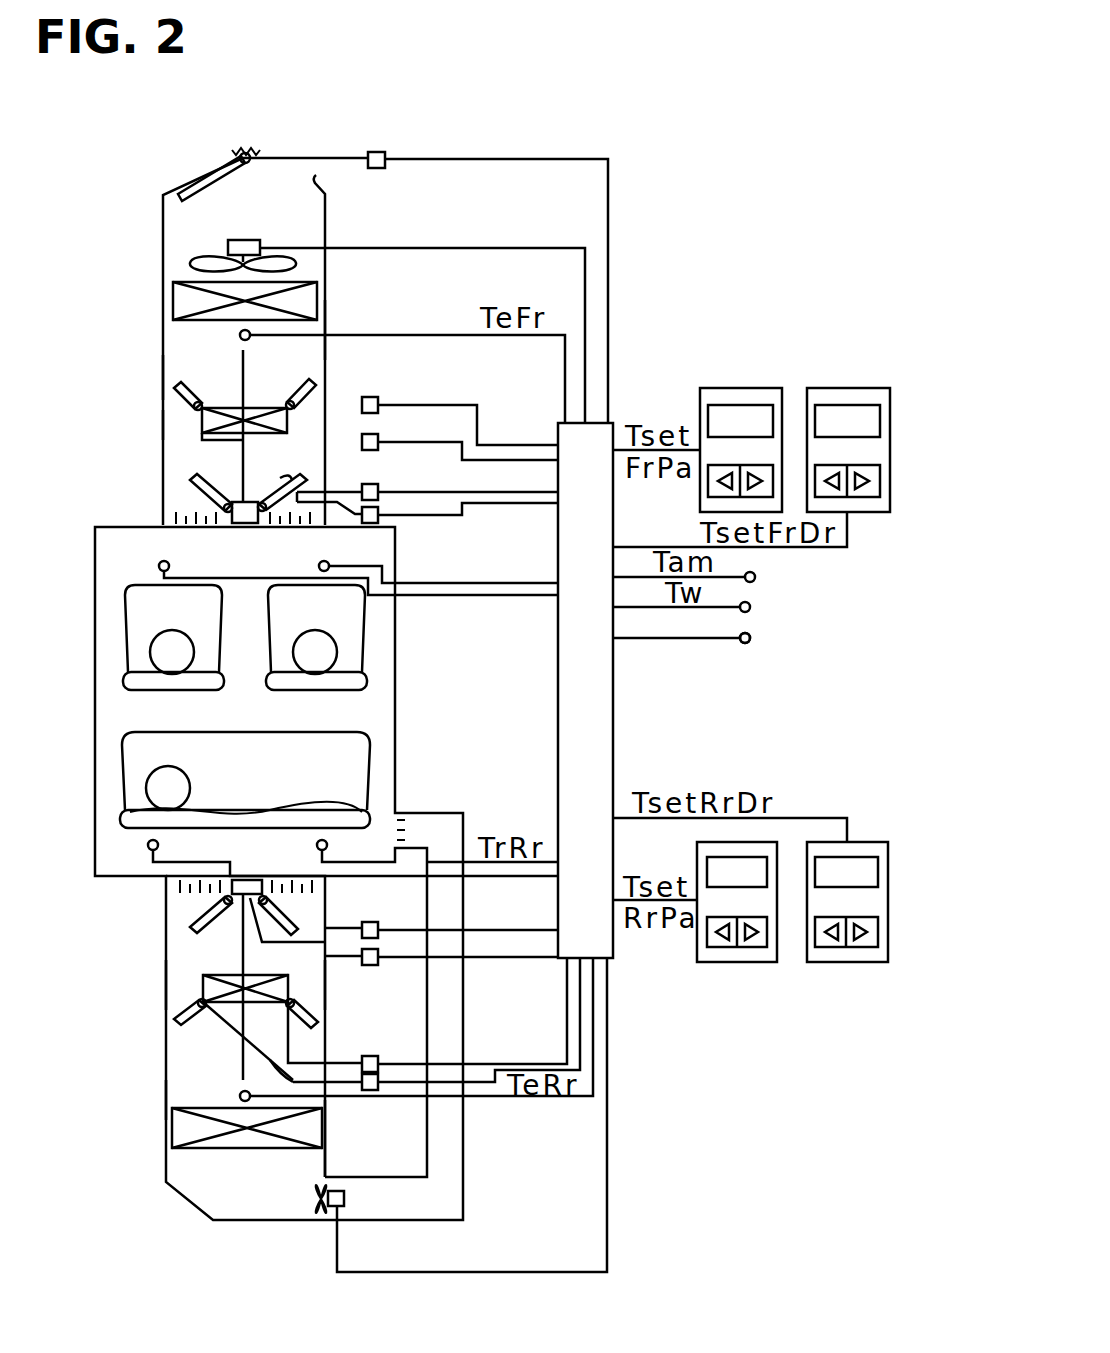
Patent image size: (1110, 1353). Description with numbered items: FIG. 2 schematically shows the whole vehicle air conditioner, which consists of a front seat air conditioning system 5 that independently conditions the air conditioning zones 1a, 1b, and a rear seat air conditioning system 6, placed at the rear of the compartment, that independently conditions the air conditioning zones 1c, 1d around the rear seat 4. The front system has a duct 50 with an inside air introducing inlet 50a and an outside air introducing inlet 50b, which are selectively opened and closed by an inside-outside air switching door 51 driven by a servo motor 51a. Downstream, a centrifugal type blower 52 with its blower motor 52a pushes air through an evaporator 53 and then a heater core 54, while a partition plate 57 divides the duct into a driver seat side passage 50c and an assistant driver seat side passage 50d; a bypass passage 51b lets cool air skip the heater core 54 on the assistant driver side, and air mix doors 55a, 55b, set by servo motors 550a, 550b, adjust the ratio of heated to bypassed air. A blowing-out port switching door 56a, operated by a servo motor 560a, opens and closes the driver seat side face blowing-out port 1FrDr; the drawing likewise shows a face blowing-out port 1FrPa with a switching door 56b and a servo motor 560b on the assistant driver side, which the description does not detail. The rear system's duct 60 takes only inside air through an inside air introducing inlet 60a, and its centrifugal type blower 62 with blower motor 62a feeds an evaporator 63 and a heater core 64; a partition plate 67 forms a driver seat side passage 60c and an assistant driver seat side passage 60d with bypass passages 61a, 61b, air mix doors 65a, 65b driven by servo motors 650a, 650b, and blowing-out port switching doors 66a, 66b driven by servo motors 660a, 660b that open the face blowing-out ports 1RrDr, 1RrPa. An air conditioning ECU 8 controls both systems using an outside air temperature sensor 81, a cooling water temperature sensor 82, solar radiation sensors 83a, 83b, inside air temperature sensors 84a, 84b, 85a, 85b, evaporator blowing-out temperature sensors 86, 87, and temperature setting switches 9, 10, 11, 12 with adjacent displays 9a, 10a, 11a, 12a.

The air conditioning zone 1a is at (340, 623).
The air conditioning zone 1b is at (195, 623).
The air conditioning zone 1c is at (340, 762).
The air conditioning zone 1d is at (195, 762).
The rear seat 4 is at (370, 752).
The front seat air conditioning system 5 is at (152, 222).
The rear seat air conditioning system 6 is at (176, 1218).
The air conditioning ECU 8 is at (614, 958).
The temperature setting switch 9 is at (765, 465).
The display 9a is at (740, 405).
The temperature setting switch 10 is at (865, 512).
The display 10a is at (845, 405).
The temperature setting switch 11 is at (865, 947).
The display 11a is at (865, 857).
The temperature setting switch 12 is at (715, 947).
The display 12a is at (760, 887).
The duct 50 is at (327, 208).
The inside air introducing inlet 50a is at (288, 172).
The outside air introducing inlet 50b is at (208, 165).
The driver seat side passage 50c is at (330, 334).
The assistant driver seat side passage 50d is at (195, 372).
The inside-outside air switching door 51 is at (180, 192).
The servo motor 51a is at (377, 152).
The bypass passage 51b is at (180, 425).
The centrifugal type blower 52 is at (300, 265).
The blower motor 52a is at (258, 243).
The evaporator 53 is at (180, 300).
The heater core 54 is at (270, 405).
The air mix door 55a is at (305, 392).
The air mix door 55b is at (180, 396).
The blowing-out port switching door 56a is at (290, 477).
The passenger side mode door 56b is at (195, 480).
The partition plate 57 is at (240, 360).
The servo motor 550a is at (378, 410).
The servo motor 550b is at (378, 447).
The servo motor 560a is at (378, 492).
The passenger side mode door actuator 560b is at (378, 518).
The front passenger side air outlet 1FrPa is at (195, 512).
The driver seat side face blowing-out port 1FrDr is at (300, 528).
The face blowing-out port 1RrPa is at (195, 885).
The driver seat side face blowing-out port 1RrDr is at (295, 890).
The duct 60 is at (327, 1145).
The inside air introducing inlet 60a is at (402, 832).
The driver seat side passage 60c is at (293, 1082).
The assistant driver seat side passage 60d is at (240, 1090).
The bypass passage 61a is at (330, 1000).
The bypass passage 61b is at (200, 990).
The centrifugal type blower 62 is at (320, 1220).
The blower motor 62a is at (340, 1207).
The evaporator 63 is at (180, 1135).
The heater core 64 is at (205, 995).
The air mix door 65a is at (305, 1002).
The air mix door 65b is at (185, 1030).
The blowing-out port switching door 66a is at (300, 935).
The blowing-out port switching door 66b is at (200, 925).
The partition plate 67 is at (240, 960).
The servo motor 650a is at (378, 1058).
The servo motor 650b is at (378, 1090).
The servo motor 660a is at (378, 930).
The servo motor 660b is at (378, 958).
The outside air temperature sensor 81 is at (756, 577).
The cooling water temperature sensor 82 is at (751, 607).
The solar radiation sensor 83a is at (751, 638).
The solar radiation sensor 83b is at (818, 637).
The inside air temperature sensor 84a is at (330, 568).
The inside air temperature sensor 84b is at (160, 563).
The inside air temperature sensor 85a is at (327, 845).
The inside air temperature sensor 85b is at (148, 845).
The temperature sensor 86 is at (240, 335).
The temperature sensor 87 is at (240, 1100).